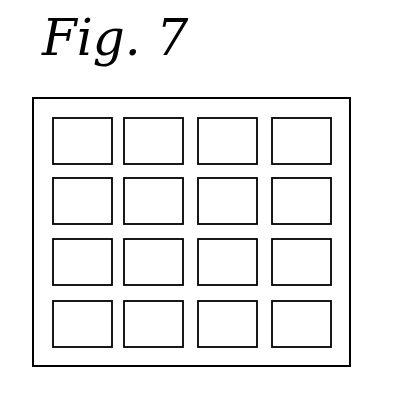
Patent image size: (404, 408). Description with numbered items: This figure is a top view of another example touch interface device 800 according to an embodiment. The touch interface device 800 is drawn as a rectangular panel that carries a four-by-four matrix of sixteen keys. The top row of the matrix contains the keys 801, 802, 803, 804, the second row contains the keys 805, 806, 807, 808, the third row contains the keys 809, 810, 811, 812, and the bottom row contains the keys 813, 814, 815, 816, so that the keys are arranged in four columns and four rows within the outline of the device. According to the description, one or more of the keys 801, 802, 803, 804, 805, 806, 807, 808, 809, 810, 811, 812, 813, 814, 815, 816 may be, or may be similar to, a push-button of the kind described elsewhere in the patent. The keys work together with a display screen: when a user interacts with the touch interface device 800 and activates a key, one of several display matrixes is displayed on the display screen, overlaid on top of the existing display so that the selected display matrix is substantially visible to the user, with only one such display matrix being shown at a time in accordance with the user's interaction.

The touch interface device 800 is at (307, 96).
The key 801 is at (61, 155).
The key 802 is at (132, 155).
The key 803 is at (206, 155).
The key 804 is at (280, 155).
The key 805 is at (61, 215).
The key 806 is at (132, 215).
The key 807 is at (206, 215).
The key 808 is at (280, 215).
The key 809 is at (61, 276).
The key 810 is at (132, 276).
The key 811 is at (206, 276).
The key 812 is at (280, 276).
The key 813 is at (61, 338).
The key 814 is at (132, 338).
The key 815 is at (206, 338).
The key 816 is at (280, 338).